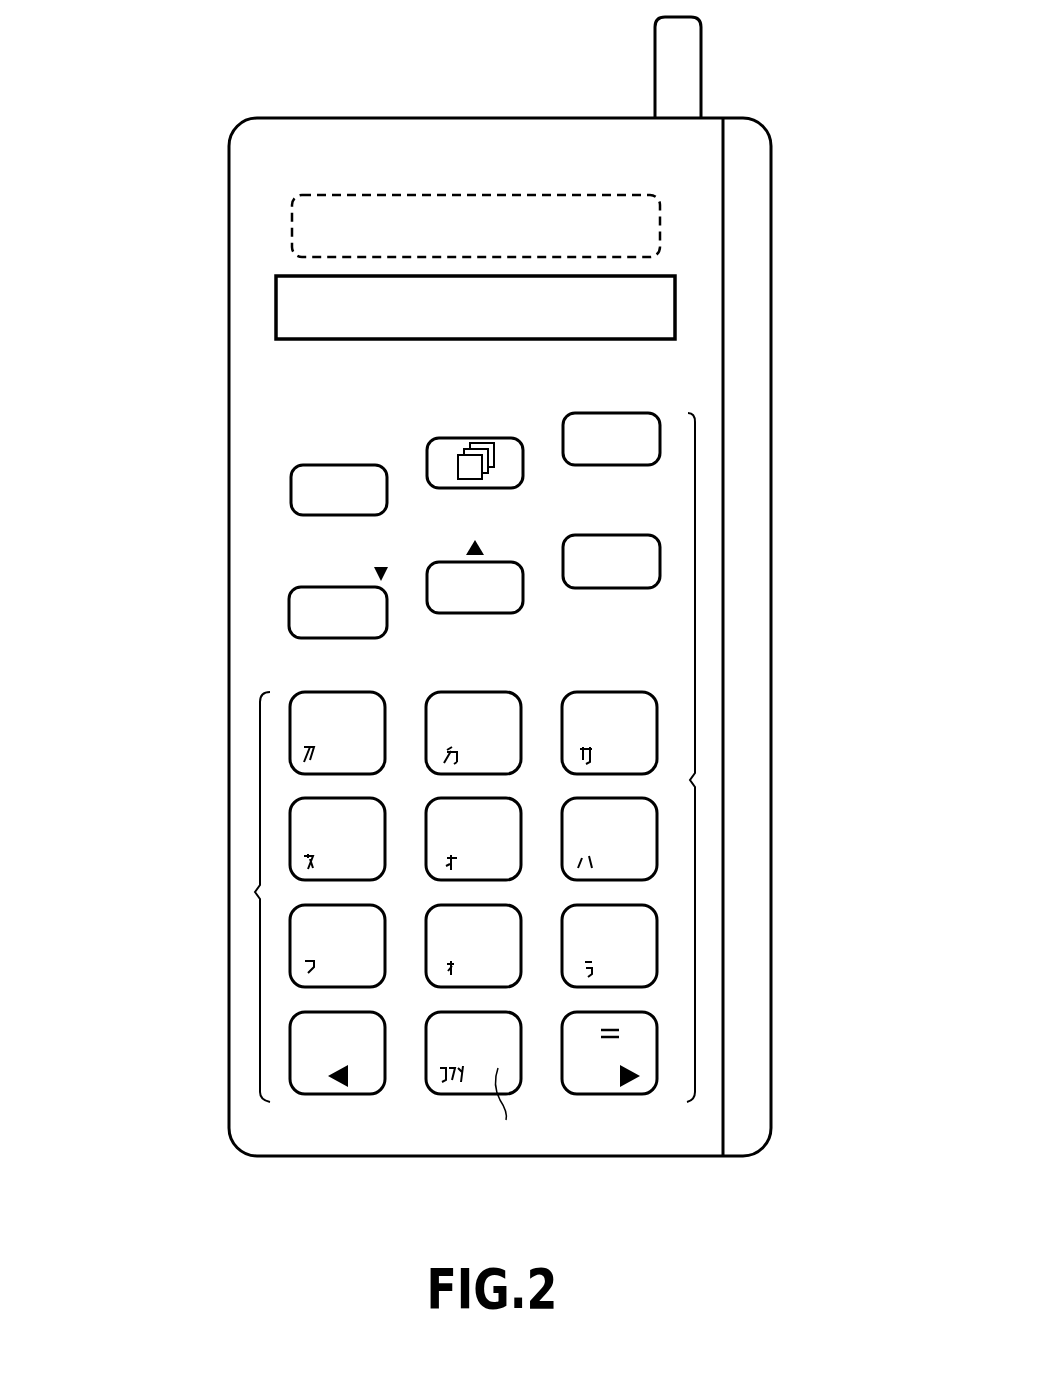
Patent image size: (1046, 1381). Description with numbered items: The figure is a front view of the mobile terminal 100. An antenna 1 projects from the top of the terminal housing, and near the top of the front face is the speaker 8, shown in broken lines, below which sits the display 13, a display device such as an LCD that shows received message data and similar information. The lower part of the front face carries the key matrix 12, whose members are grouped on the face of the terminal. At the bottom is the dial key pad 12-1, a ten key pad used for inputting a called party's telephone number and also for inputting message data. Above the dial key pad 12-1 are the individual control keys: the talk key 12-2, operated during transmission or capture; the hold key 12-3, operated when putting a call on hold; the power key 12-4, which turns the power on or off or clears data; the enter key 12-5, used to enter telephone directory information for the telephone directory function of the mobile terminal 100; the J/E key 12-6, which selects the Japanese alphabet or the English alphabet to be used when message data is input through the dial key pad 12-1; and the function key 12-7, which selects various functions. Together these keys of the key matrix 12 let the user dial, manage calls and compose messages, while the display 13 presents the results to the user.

The mobile terminal 100 is at (468, 63).
The antenna 1 is at (702, 76).
The speaker 8 is at (548, 194).
The display 13 is at (680, 310).
The key matrix 12 is at (696, 780).
The dial key pad 12-1 is at (258, 893).
The talk key 12-2 is at (291, 488).
The hold key 12-3 is at (437, 438).
The power key 12-4 is at (580, 466).
The enter key 12-5 is at (322, 640).
The J/E key 12-6 is at (465, 614).
The function key 12-7 is at (582, 590).